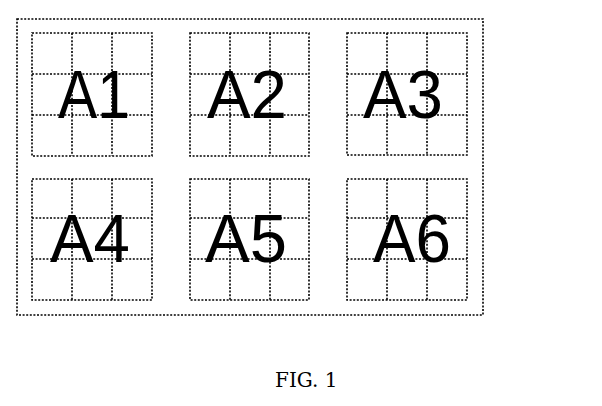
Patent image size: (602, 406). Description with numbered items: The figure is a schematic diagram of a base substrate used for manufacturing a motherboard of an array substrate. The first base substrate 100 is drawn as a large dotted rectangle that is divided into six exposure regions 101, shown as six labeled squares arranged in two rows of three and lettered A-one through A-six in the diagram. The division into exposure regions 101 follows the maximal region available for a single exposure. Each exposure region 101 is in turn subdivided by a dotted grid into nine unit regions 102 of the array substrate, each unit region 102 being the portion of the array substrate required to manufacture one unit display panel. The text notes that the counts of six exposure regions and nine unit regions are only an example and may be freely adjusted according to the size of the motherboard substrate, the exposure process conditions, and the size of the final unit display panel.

The first base substrate 100 is at (483, 278).
The exposure region 101 is at (453, 84).
The unit region of the array substrate 102 is at (458, 145).